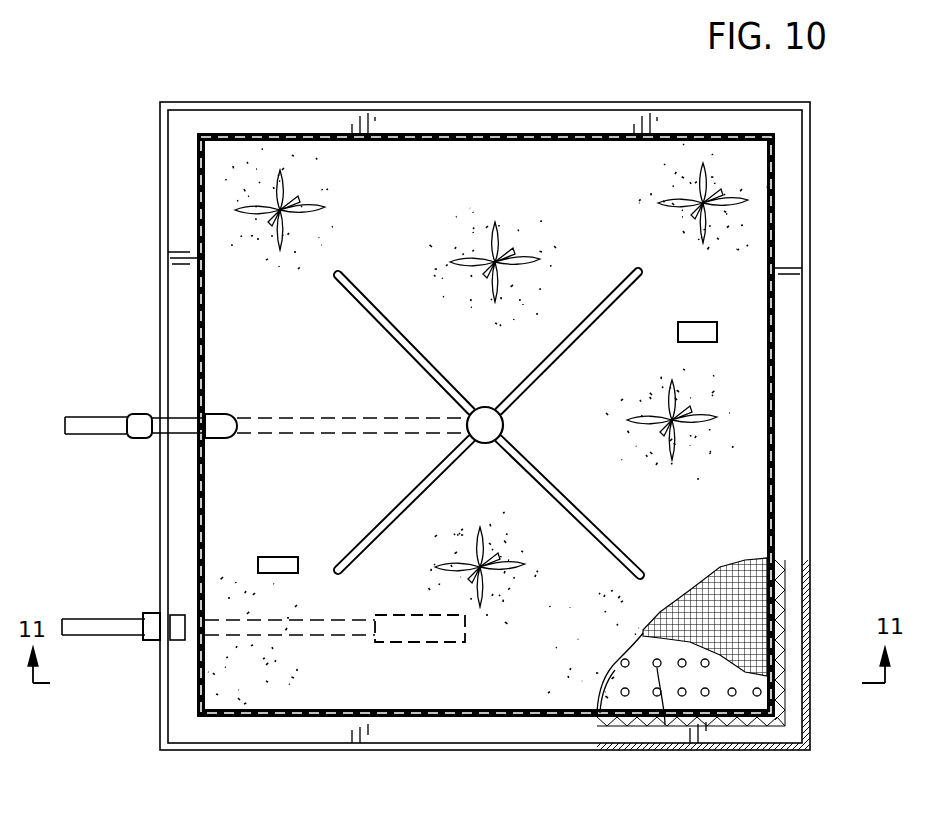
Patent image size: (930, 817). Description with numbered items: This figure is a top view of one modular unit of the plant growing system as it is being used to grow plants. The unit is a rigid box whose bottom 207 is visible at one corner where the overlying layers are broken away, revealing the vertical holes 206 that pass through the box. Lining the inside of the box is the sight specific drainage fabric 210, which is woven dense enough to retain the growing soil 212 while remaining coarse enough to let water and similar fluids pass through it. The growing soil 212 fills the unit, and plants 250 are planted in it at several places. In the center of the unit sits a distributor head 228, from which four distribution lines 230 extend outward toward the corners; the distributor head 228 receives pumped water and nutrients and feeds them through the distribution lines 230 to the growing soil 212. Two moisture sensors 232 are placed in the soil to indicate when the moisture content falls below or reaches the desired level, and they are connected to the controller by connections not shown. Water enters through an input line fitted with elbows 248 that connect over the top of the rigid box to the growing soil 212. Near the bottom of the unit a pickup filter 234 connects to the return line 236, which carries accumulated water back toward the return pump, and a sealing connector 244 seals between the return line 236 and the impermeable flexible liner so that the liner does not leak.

The vertical holes 206 is at (682, 697).
The bottom 207 is at (710, 672).
The sight specific drainage fabric 210 is at (760, 590).
The growing soil 212 is at (735, 465).
The distributor heads 228 is at (483, 424).
The distribution lines 230 is at (432, 468).
The moisture sensors 232 is at (712, 335).
The pickup filter 234 is at (432, 643).
The return line 236 is at (300, 636).
The sealing connector 244 is at (150, 640).
The elbows 248 is at (207, 415).
The plants 250 is at (460, 263).